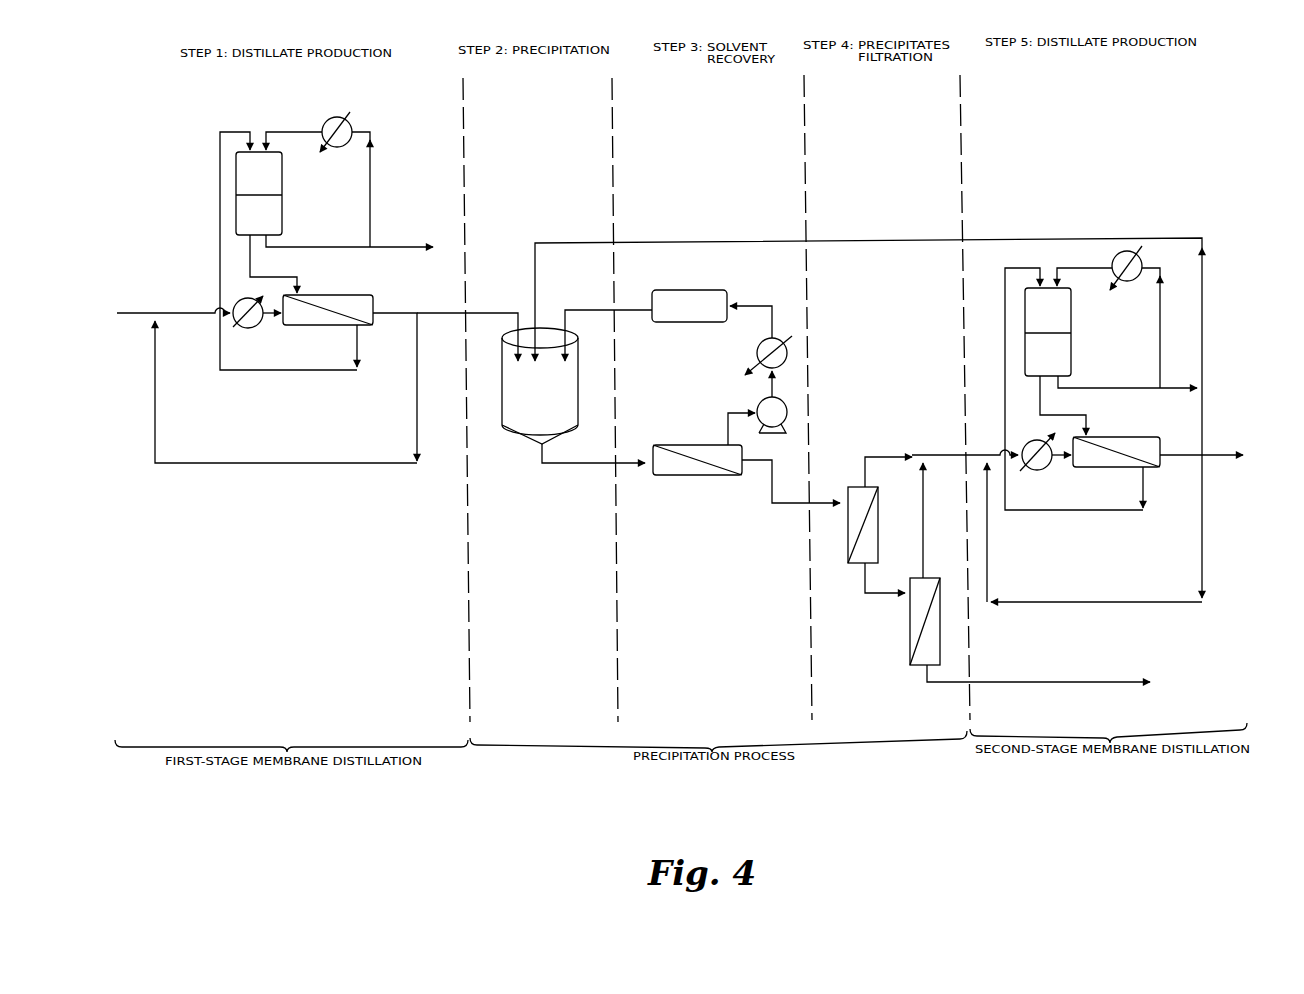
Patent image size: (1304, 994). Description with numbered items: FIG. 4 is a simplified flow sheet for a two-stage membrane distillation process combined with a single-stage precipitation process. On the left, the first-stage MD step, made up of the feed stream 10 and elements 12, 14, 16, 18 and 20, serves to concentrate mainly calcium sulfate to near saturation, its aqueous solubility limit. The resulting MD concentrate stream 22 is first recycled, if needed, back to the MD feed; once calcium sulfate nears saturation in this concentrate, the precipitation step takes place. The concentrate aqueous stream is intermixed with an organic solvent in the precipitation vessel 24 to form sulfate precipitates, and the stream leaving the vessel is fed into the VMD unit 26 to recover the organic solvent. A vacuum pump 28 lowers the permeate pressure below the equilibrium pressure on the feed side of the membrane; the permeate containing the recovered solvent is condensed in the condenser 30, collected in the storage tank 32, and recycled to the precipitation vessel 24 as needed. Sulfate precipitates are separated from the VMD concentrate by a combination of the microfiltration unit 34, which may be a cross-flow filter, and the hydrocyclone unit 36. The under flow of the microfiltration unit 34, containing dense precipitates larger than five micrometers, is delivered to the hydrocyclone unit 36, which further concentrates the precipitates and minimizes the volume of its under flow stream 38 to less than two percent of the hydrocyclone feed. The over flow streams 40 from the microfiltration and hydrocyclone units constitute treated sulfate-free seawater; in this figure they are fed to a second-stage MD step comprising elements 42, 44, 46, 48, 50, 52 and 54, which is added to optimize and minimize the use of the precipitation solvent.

The membrane distillation step feed stream 10 is at (173, 305).
The membrane distillation step component 12 is at (259, 332).
The membrane distillation step component 14 is at (318, 330).
The membrane distillation step component 16 is at (294, 193).
The membrane distillation step component 18 is at (295, 131).
The membrane distillation step component 20 is at (351, 237).
The MD concentrate stream 22 is at (286, 397).
The precipitation vessel 24 is at (500, 430).
The VMD unit 26 is at (746, 495).
The vacuum pump 28 is at (744, 408).
The condenser 30 is at (735, 340).
The storage tank 32 is at (687, 285).
The microfiltration unit 34 is at (854, 484).
The hydrocyclone unit 36 is at (908, 623).
The under flow stream 38 is at (1038, 673).
The over flow streams of the MF and HC units 40 is at (1045, 474).
The second-stage MD step component 42 is at (1108, 472).
The second-stage MD step component 44 is at (1083, 332).
The second-stage MD step component 46 is at (1085, 267).
The second-stage MD step component 48 is at (1127, 389).
The second-stage MD step component 50 is at (1103, 539).
The second-stage MD step component 52 is at (868, 337).
The second-stage MD step component 54 is at (1203, 450).